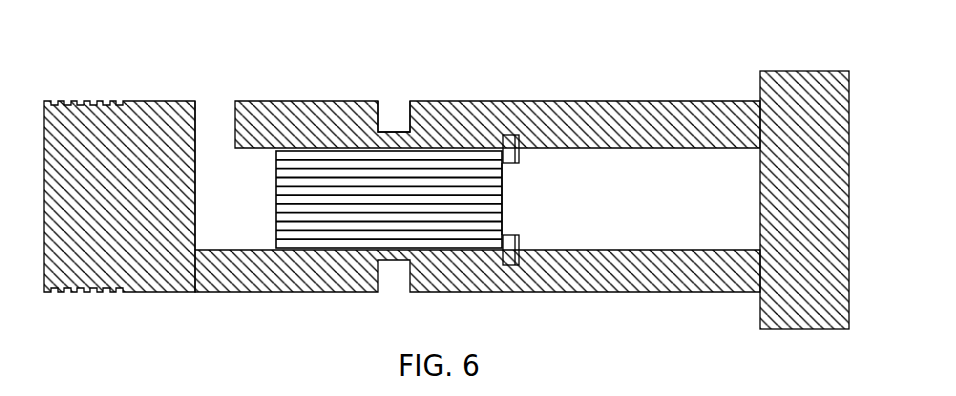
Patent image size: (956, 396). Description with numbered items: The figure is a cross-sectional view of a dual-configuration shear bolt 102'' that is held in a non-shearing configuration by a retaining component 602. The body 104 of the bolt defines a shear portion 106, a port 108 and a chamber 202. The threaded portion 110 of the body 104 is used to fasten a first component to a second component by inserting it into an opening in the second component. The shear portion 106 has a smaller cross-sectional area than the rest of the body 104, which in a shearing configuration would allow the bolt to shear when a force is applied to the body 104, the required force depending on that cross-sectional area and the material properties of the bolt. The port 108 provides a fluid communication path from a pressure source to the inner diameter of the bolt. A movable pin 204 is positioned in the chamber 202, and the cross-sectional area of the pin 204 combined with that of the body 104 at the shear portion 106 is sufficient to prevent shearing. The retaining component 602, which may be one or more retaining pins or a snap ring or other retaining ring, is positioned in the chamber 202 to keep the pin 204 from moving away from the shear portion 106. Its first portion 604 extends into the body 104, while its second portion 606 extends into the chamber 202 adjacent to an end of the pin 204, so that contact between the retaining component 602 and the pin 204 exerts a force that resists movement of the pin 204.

The dual-configuration shear bolt 102'' is at (793, 167).
The body 104 is at (533, 97).
The shear portion 106 is at (394, 117).
The port 108 is at (200, 100).
The threaded portion 110 is at (100, 86).
The chamber 202 is at (213, 235).
The pin 204 is at (262, 183).
The retaining component 602 is at (518, 165).
The first portion 604 is at (522, 137).
The second portion 606 is at (525, 147).